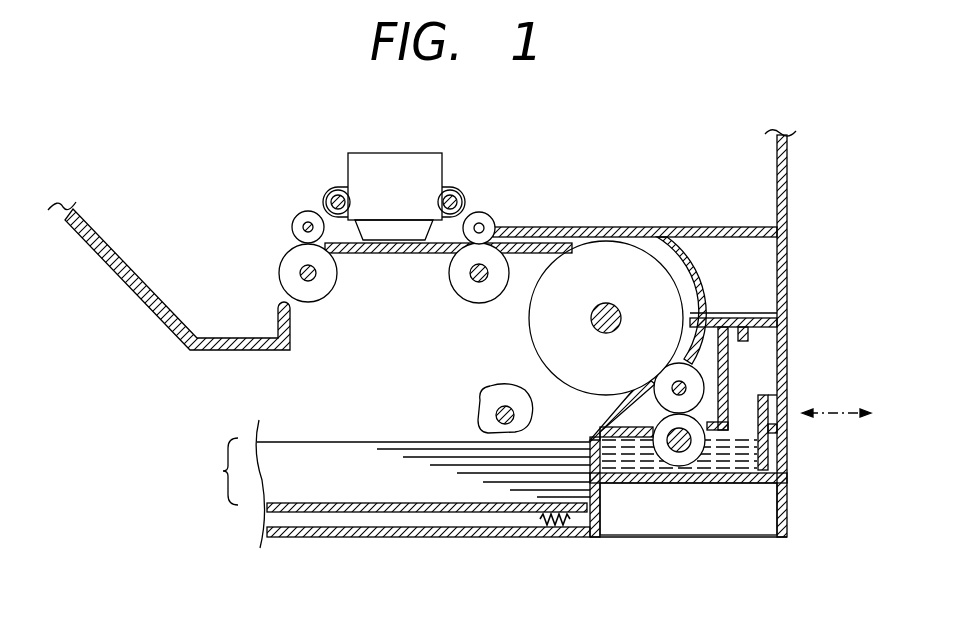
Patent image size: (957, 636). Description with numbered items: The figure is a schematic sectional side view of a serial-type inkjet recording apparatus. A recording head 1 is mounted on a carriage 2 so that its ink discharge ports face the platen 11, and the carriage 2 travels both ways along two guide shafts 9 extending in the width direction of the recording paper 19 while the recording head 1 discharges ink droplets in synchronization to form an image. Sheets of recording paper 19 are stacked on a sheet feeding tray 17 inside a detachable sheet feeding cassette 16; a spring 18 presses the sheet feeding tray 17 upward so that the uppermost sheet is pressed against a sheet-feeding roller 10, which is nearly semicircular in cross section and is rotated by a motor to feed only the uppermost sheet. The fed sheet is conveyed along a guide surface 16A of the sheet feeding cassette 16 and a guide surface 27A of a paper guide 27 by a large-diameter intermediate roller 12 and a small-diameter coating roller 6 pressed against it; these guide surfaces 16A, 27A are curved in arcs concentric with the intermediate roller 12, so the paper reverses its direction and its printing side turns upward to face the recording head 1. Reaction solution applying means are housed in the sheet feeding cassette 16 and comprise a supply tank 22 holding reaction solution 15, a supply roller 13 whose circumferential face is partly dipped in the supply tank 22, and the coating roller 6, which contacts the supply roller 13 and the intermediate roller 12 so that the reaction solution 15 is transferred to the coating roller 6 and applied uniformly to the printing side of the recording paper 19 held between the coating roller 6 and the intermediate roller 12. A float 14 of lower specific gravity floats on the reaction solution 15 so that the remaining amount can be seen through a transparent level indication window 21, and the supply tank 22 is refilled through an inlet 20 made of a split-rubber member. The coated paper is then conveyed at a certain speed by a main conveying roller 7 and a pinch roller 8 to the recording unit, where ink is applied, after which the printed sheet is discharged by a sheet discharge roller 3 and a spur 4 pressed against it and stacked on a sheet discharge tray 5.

The recording head 1 is at (380, 232).
The carriage 2 is at (395, 160).
The sheet discharge roller 3 is at (285, 272).
The spur 4 is at (298, 217).
The sheet discharge tray 5 is at (97, 258).
The coating roller 6 is at (700, 388).
The main conveying roller 7 is at (468, 296).
The pinch roller 8 is at (490, 213).
The guide shafts 9 is at (330, 192).
The sheet-feeding roller 10 is at (485, 413).
The platen 11 is at (416, 255).
The intermediate roller 12 is at (548, 332).
The supply roller 13 is at (679, 466).
The float 14 is at (778, 430).
The reaction solution 15 is at (715, 455).
The sheet feeding cassette 16 is at (787, 512).
The guide surface 16A is at (655, 400).
The sheet feeding tray 17 is at (348, 512).
The spring 18 is at (547, 537).
The recording paper 19 is at (393, 471).
The inlet 20 is at (745, 316).
The level indication window 21 is at (767, 458).
The supply tank 22 is at (780, 350).
The paper guide 27 is at (782, 250).
The guide surface 27A is at (684, 226).